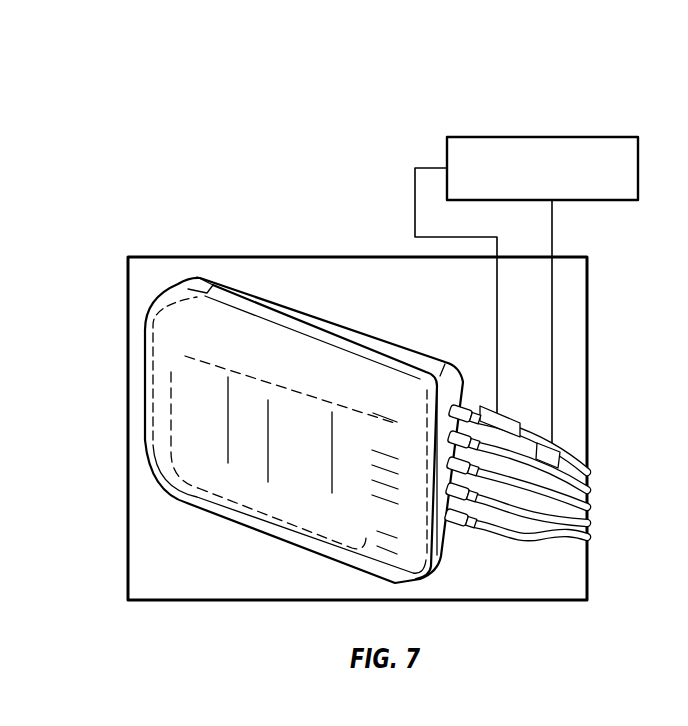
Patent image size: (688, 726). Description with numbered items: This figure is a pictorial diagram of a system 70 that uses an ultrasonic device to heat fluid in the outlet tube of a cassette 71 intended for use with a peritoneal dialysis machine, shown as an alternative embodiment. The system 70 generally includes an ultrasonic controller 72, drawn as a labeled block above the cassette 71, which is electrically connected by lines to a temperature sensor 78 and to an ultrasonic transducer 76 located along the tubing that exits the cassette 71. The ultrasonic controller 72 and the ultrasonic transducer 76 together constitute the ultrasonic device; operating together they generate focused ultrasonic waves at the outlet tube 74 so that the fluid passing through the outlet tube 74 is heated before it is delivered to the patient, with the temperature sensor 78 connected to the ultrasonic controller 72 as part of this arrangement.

The system 70 is at (105, 58).
The cassette 71 is at (162, 257).
The ultrasonic controller 72 is at (453, 137).
The outlet tube 74 is at (457, 416).
The ultrasonic transducer 76 is at (503, 414).
The temperature sensor 78 is at (555, 452).